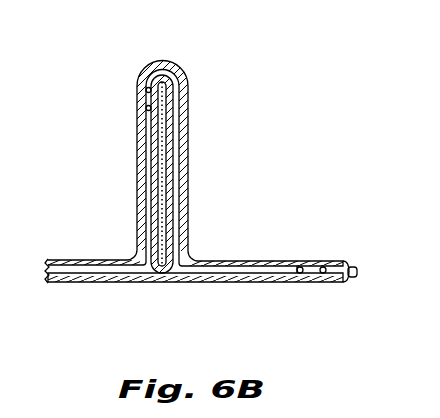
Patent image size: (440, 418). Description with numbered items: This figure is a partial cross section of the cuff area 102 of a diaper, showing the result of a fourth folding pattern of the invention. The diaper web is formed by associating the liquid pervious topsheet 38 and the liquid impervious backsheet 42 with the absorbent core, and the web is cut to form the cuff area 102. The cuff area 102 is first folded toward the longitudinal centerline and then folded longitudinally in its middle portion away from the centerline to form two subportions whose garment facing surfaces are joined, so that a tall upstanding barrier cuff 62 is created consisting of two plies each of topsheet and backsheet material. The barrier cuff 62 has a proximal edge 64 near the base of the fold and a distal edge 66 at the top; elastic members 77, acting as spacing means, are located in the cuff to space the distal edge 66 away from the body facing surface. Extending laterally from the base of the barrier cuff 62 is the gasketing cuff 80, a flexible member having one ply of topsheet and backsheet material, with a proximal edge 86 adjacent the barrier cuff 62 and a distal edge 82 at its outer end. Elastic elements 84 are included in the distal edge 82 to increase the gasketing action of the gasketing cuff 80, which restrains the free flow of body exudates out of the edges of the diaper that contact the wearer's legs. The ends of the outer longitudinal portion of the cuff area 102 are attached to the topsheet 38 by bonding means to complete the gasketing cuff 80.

The topsheet 38 is at (83, 261).
The backsheet 42 is at (82, 283).
The barrier cuff 62 is at (187, 110).
The proximal edge 64 is at (190, 260).
The distal edge 66 is at (168, 61).
The elastic members 77 is at (145, 107).
The gasketing cuff 80 is at (297, 262).
The distal edge 82 is at (358, 278).
The elastic elements 84 is at (323, 268).
The proximal edge 86 is at (192, 284).
The cuff area 102 is at (277, 155).